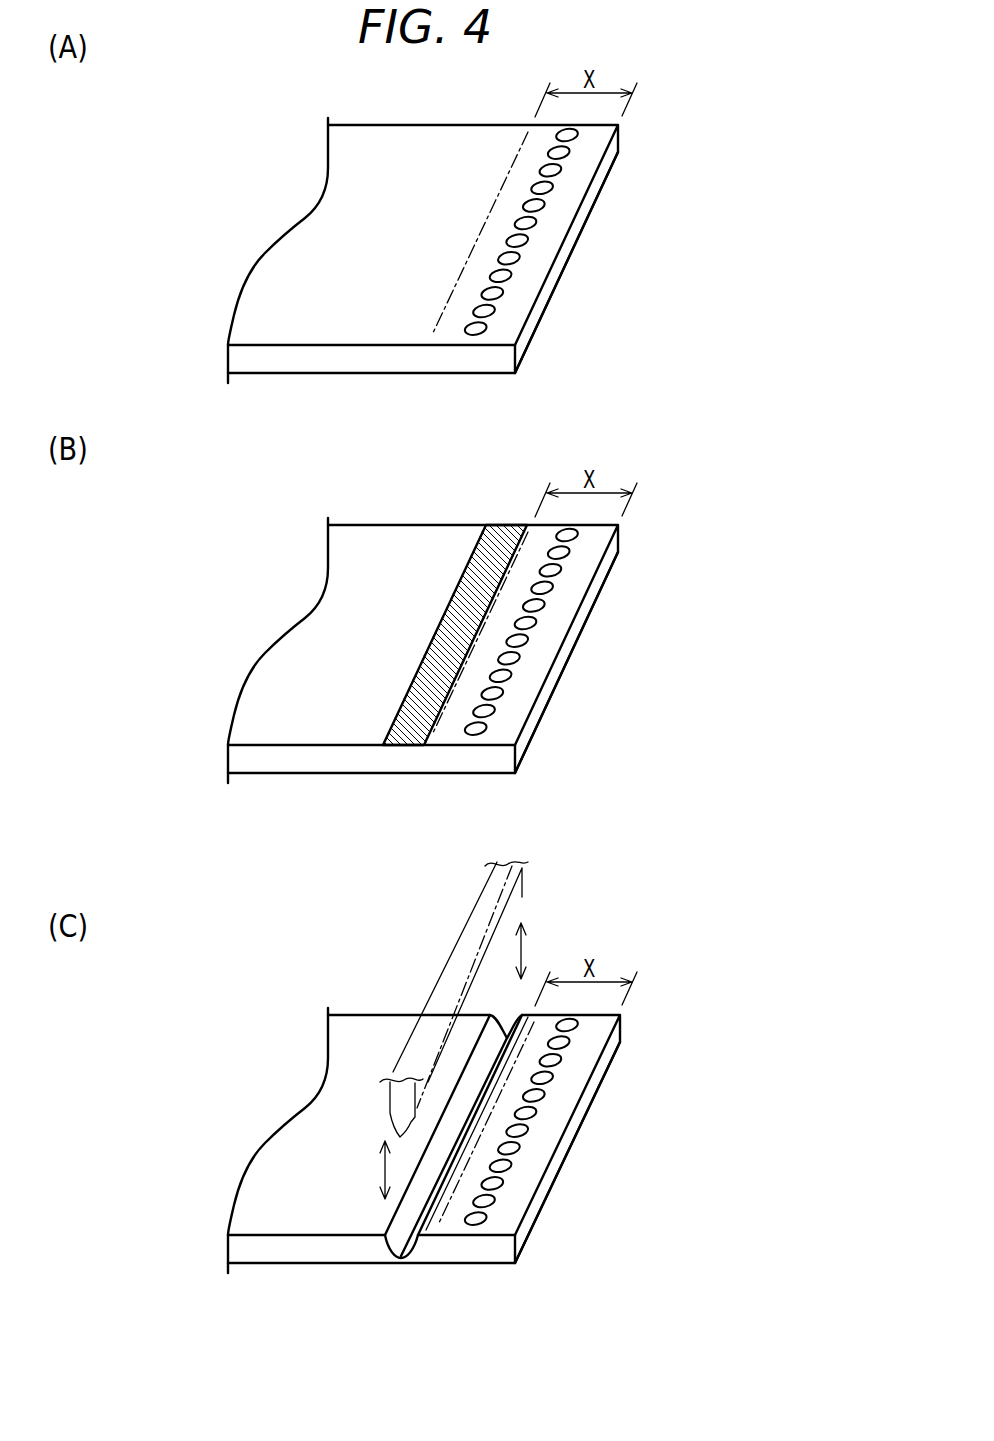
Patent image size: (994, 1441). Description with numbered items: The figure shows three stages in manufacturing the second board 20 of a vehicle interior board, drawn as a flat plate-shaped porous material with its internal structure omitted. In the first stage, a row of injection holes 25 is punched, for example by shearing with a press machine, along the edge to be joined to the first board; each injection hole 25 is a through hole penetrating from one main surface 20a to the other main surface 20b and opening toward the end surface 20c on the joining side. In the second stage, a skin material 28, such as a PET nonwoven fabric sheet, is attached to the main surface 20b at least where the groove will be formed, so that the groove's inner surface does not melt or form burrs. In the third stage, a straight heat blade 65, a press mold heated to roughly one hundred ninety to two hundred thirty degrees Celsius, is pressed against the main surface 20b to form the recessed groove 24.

The second board 20 is at (209, 130).
The main surface 20a is at (330, 332).
The main surface 20b is at (317, 242).
The end surface 20c is at (545, 298).
The recessed groove 24 is at (401, 1240).
The injection hole 25 is at (543, 206).
The skin material 28 is at (465, 598).
The heat blade 65 is at (382, 1092).